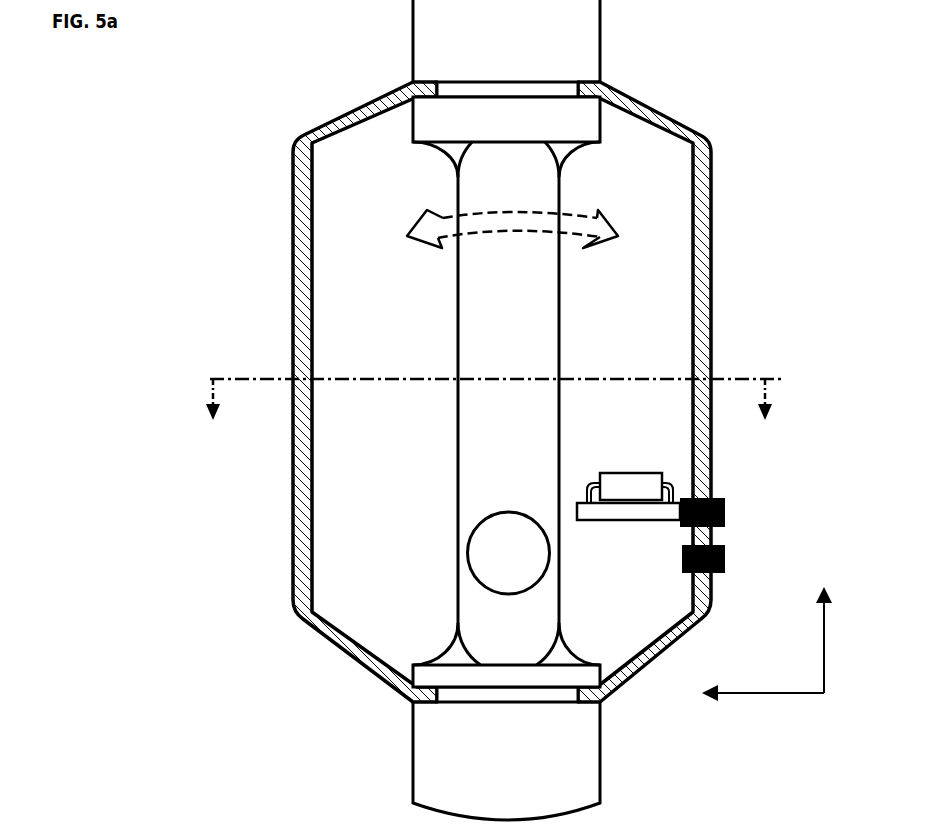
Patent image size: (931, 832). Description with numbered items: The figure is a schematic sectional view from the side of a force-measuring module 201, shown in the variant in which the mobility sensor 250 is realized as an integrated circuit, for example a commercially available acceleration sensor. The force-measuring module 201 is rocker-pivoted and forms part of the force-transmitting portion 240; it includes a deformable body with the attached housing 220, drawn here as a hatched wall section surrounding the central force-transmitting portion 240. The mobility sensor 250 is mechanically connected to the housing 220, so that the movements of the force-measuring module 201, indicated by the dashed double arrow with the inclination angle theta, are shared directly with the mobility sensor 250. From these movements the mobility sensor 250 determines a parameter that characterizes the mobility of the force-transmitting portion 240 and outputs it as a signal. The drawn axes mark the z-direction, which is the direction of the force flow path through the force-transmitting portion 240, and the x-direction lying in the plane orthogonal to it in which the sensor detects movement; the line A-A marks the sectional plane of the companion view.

The force-measuring module 201 is at (196, 645).
The housing 220 is at (293, 432).
The force-transmitting portion 240 is at (457, 465).
The mobility sensor 250 is at (655, 480).